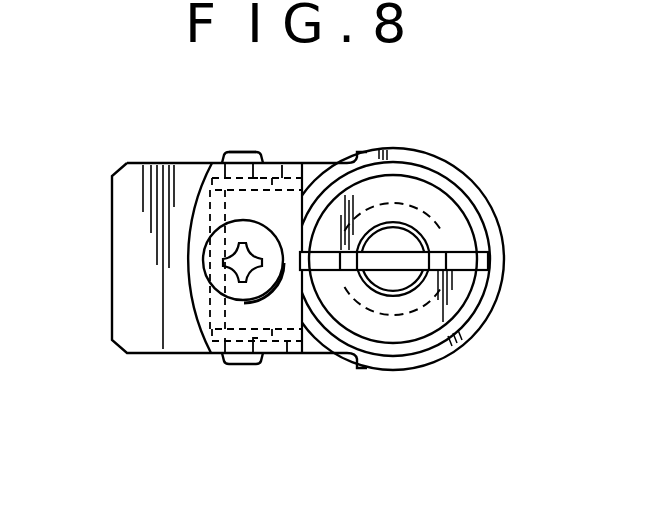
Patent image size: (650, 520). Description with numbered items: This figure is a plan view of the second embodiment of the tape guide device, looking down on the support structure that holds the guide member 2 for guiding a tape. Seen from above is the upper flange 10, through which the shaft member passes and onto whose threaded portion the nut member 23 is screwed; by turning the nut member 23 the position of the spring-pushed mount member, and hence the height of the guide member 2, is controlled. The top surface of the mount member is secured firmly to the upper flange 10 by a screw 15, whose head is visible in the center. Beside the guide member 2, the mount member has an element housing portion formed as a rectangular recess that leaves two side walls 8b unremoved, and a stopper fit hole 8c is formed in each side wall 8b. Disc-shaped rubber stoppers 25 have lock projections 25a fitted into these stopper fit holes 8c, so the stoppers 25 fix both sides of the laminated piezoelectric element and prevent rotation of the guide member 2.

The guide member 2 is at (112, 268).
The upper flange 10 is at (326, 172).
The screw 15 is at (224, 276).
The nut member 23 is at (449, 217).
The stopper 25 is at (222, 163).
The lock projection 25a is at (238, 152).
The stopper fit hole 8c is at (257, 160).
The side wall 8b is at (282, 165).